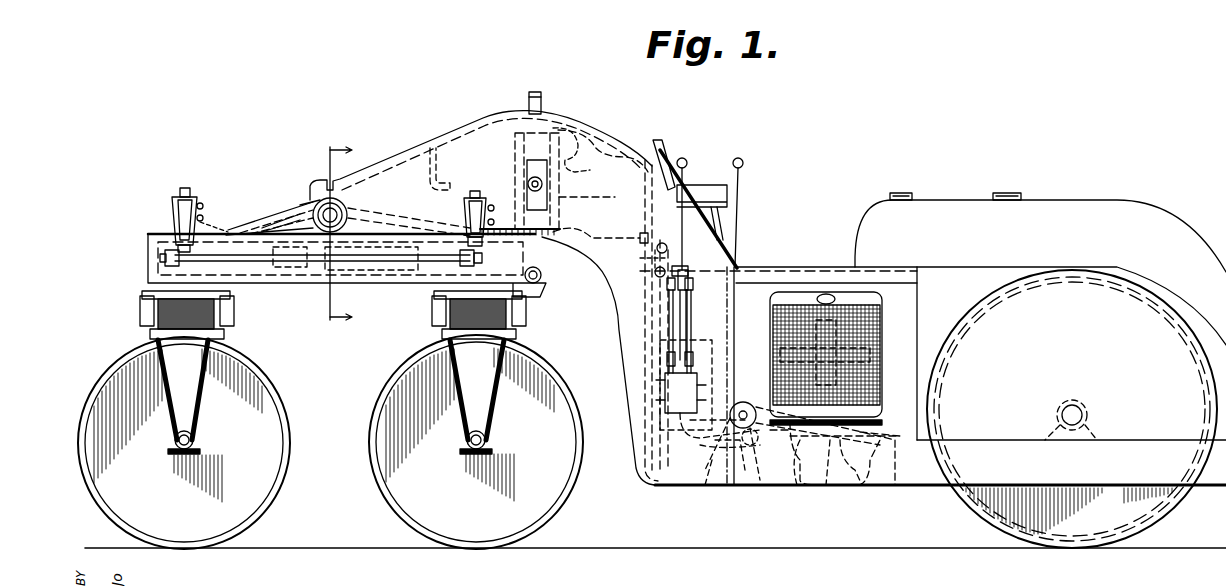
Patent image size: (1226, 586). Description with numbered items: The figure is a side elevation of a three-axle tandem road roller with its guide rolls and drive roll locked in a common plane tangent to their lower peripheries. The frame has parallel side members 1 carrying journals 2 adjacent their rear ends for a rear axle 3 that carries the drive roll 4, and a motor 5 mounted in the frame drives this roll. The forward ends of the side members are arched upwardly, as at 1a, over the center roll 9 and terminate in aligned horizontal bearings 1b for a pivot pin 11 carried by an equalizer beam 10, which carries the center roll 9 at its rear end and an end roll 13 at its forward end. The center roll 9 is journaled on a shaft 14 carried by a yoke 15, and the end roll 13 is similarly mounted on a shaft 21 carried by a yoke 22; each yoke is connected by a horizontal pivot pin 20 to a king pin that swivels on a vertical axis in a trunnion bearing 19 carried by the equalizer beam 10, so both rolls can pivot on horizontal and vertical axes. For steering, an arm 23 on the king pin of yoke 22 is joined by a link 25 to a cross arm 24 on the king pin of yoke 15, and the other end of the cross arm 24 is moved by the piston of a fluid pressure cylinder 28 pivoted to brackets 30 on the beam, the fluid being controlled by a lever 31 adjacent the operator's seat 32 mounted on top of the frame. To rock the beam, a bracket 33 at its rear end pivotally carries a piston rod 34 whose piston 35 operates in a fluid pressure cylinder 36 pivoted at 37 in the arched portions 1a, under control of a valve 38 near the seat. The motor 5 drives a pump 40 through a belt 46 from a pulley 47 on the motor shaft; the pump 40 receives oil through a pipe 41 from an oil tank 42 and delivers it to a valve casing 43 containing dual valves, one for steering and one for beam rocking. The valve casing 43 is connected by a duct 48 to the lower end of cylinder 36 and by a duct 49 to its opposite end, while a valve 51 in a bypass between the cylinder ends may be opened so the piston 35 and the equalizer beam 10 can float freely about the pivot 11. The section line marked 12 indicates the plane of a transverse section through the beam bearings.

The side members 1 is at (950, 275).
The upwardly arched portions 1a is at (625, 278).
The horizontal bearings 1b is at (345, 205).
The journals 2 is at (1058, 405).
The rear axle 3 is at (1078, 412).
The drive roll 4 is at (1175, 505).
The motor 5 is at (870, 447).
The center roll 9 is at (368, 466).
The equalizer beam 10 is at (248, 210).
The pivot pin 11 is at (316, 200).
The section line 12- 12 is at (337, 234).
The end roll 13 is at (260, 382).
The shaft 14 is at (486, 440).
The yoke 15 is at (518, 352).
The trunnion bearing 19 is at (163, 258).
The horizontal pivot pin 20 is at (140, 306).
The shaft 21 is at (178, 441).
The yoke 22 is at (165, 350).
The arm 23 is at (172, 212).
The cross arm 24 is at (464, 215).
The link 25 is at (252, 265).
The fluid pressure cylinder 28 is at (352, 268).
The brackets 30 is at (288, 212).
The lever 31 is at (688, 165).
The operator's seat 32 is at (700, 188).
The bracket 33 is at (542, 272).
The piston rod 34 is at (543, 104).
The piston 35 is at (527, 180).
The fluid pressure cylinder 36 is at (520, 164).
The pivot 37 is at (527, 184).
The valve 38 is at (642, 258).
The pump 40 is at (760, 402).
The pipe 41 is at (710, 475).
The oil tank 42 is at (660, 421).
The valve casing 43 is at (650, 384).
The belt 46 is at (795, 482).
The pulley 47 is at (850, 482).
The duct 48 is at (590, 240).
The duct 49 is at (600, 142).
The valve 51 is at (572, 172).